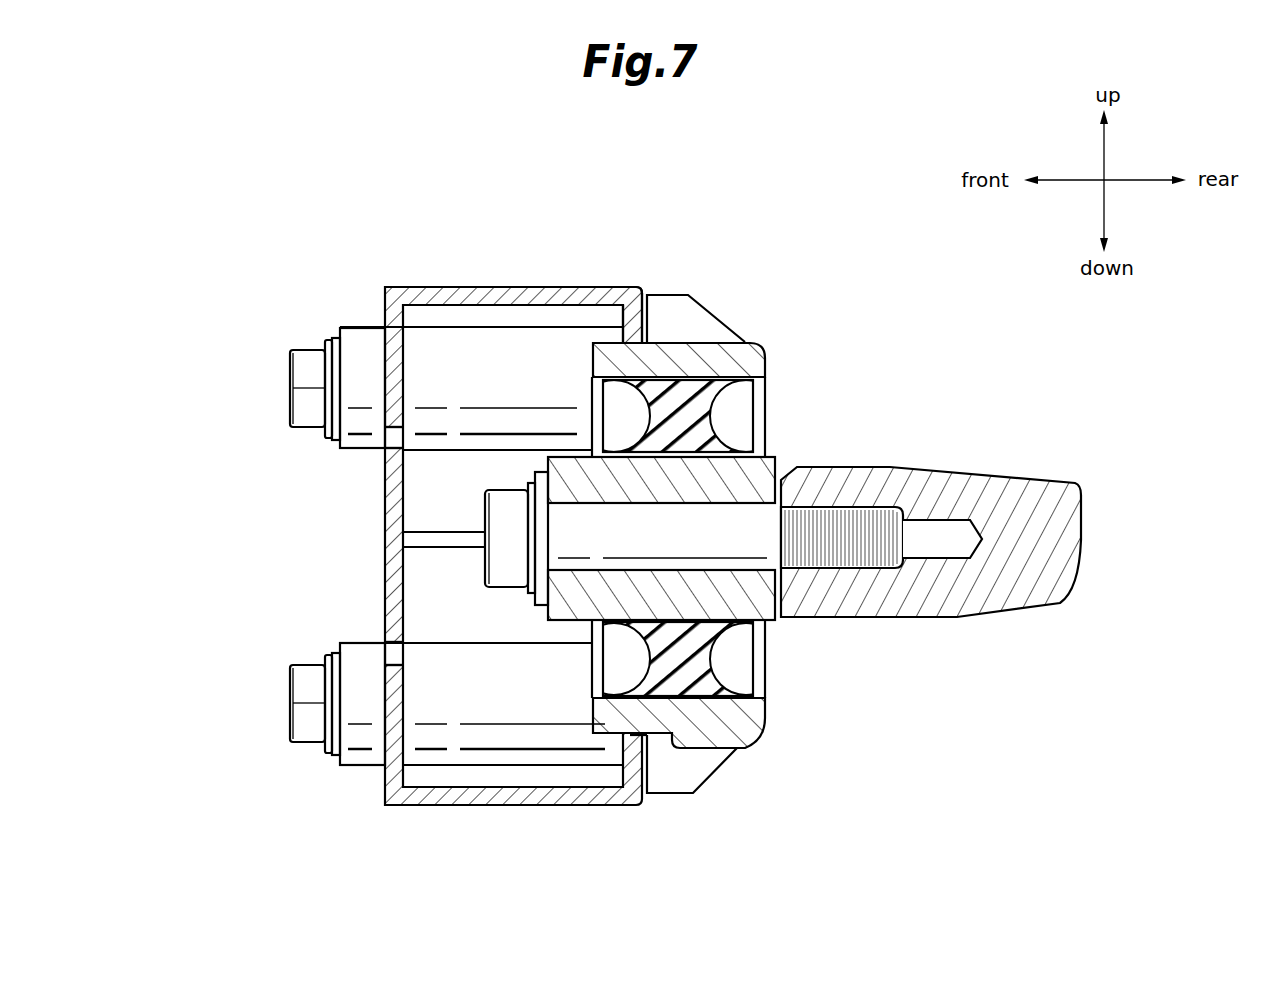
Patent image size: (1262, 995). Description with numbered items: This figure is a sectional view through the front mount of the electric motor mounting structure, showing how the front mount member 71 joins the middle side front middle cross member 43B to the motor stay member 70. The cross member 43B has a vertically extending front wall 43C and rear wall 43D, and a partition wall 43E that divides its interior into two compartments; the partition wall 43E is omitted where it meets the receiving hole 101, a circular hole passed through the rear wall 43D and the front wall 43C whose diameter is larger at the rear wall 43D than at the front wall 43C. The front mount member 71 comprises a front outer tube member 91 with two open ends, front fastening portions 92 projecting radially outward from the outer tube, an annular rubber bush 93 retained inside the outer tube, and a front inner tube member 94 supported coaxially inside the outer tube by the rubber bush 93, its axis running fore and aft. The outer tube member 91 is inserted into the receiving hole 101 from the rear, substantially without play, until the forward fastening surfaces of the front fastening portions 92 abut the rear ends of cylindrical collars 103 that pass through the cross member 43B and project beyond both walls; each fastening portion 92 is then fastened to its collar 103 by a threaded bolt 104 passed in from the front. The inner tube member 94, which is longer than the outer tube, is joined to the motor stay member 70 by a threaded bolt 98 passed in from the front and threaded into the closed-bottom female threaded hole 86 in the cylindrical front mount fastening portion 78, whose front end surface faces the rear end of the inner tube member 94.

The middle side front middle cross member 43B is at (489, 276).
The front wall 43C is at (388, 796).
The rear wall 43D is at (646, 310).
The partition wall 43E is at (435, 543).
The motor stay member 70 is at (1053, 462).
The front mount member 71 is at (717, 516).
The front mount fastening portion 78 is at (993, 487).
The female threaded hole 86 is at (843, 520).
The front outer tube member 91 is at (762, 712).
The front fastening portion 92 is at (684, 310).
The annular rubber bush 93 is at (714, 678).
The front inner tube member 94 is at (780, 460).
The threaded bolt 98 is at (498, 498).
The receiving hole 101 is at (614, 358).
The collar 103 is at (362, 330).
The threaded bolt 104 is at (307, 372).